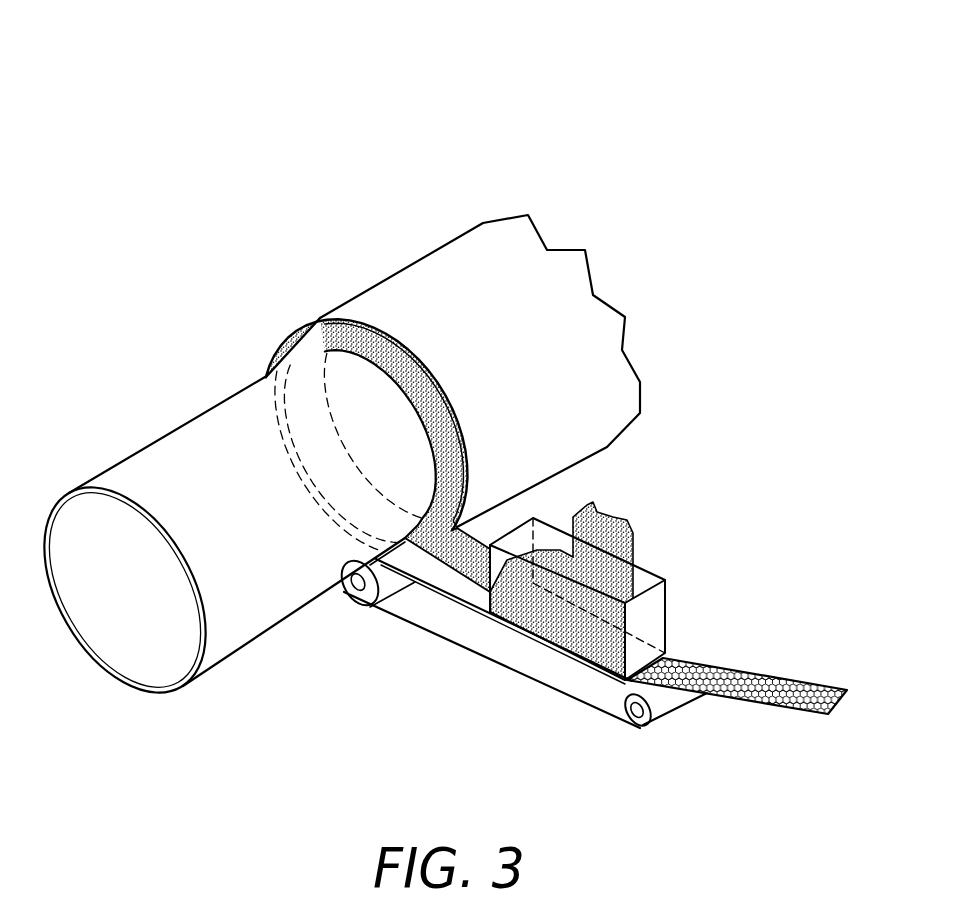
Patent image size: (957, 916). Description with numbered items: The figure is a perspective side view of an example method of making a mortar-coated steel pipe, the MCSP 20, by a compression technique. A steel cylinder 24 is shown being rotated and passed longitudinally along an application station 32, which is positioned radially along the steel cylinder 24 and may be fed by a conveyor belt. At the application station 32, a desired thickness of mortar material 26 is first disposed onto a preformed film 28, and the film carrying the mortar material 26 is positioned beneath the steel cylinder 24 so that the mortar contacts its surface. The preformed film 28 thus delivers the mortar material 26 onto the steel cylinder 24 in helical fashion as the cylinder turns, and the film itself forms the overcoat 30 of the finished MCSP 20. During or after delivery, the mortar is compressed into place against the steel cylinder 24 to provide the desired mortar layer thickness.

The MCSP 20 is at (540, 124).
The steel cylinder 24 is at (252, 528).
The mortar material 26 is at (419, 392).
The preformed film 28 is at (771, 662).
The overcoat 30 is at (537, 366).
The application station 32 is at (682, 615).